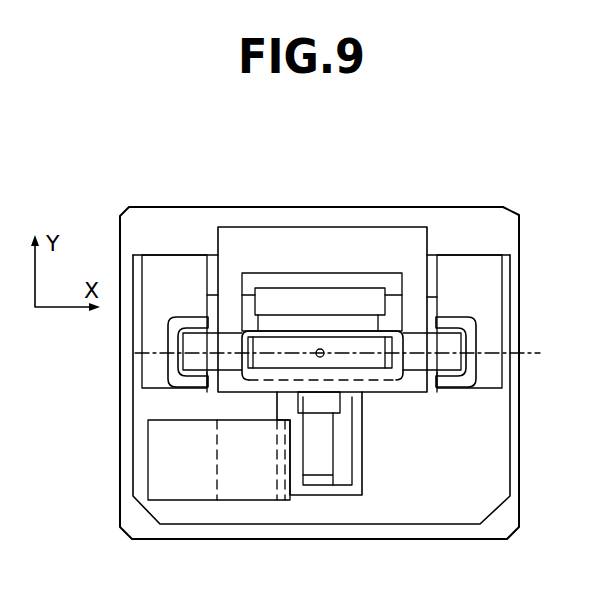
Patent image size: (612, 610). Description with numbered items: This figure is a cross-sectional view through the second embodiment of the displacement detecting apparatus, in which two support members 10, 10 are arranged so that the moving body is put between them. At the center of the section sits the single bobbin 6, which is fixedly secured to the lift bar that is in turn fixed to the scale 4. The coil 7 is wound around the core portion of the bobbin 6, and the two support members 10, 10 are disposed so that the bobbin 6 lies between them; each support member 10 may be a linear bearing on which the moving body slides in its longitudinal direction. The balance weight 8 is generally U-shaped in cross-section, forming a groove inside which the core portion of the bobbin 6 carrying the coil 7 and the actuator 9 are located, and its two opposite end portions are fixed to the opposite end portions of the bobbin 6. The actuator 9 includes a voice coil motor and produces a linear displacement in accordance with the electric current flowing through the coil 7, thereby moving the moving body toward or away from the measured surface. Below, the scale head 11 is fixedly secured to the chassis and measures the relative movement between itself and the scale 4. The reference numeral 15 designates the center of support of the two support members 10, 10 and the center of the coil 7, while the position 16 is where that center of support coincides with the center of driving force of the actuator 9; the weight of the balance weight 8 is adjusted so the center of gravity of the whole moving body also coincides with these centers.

The scale 4 is at (320, 463).
The bobbin 6 is at (400, 387).
The coil 7 is at (403, 367).
The balance weight 8 is at (393, 247).
The actuator 9 is at (273, 295).
The support member 10 is at (192, 362).
The scale head 11 is at (200, 483).
The center of support 15 is at (530, 357).
The position of coincidence 16 is at (320, 349).